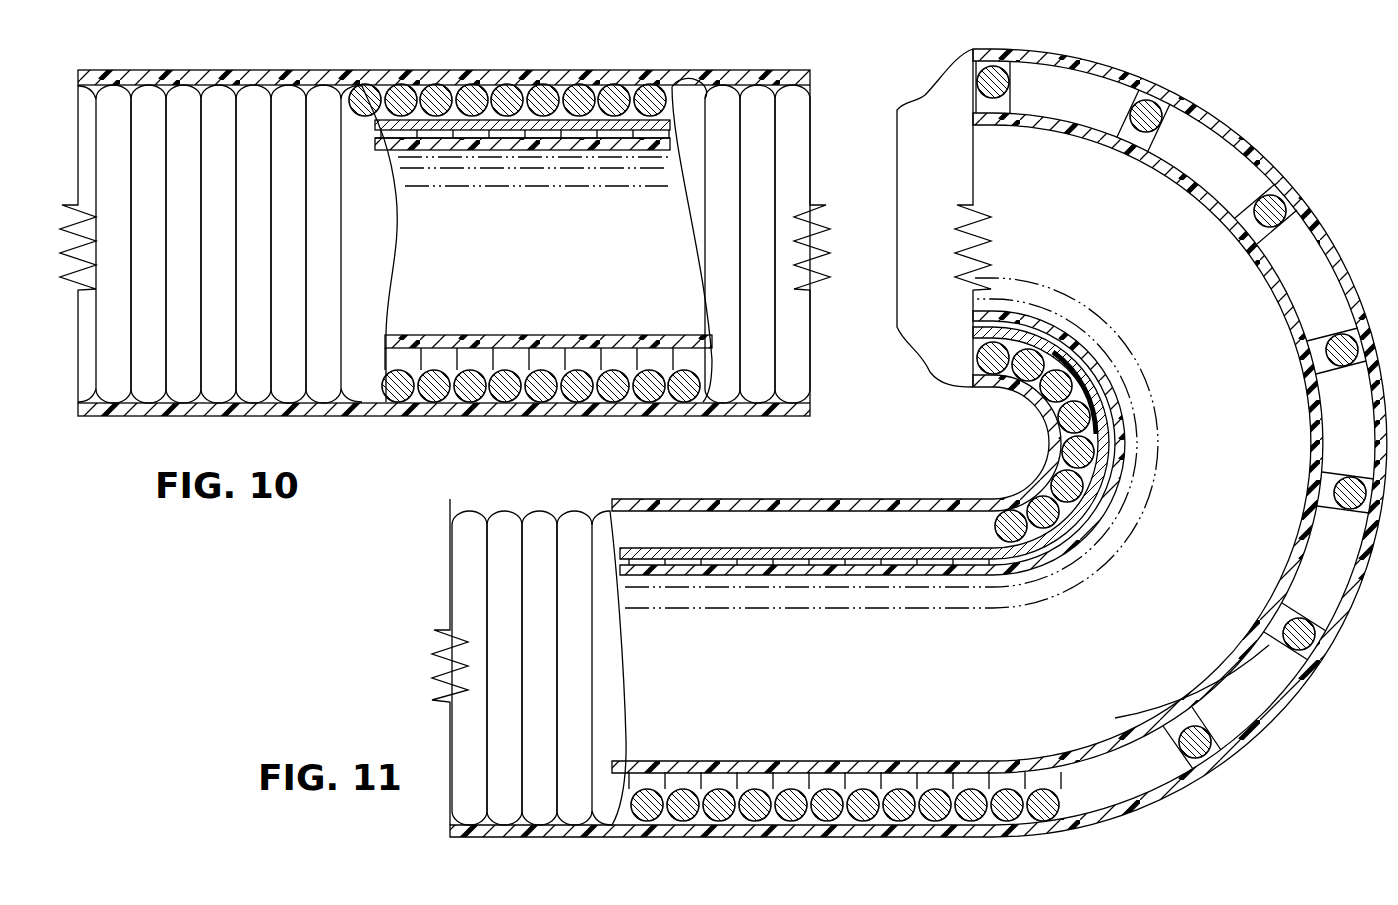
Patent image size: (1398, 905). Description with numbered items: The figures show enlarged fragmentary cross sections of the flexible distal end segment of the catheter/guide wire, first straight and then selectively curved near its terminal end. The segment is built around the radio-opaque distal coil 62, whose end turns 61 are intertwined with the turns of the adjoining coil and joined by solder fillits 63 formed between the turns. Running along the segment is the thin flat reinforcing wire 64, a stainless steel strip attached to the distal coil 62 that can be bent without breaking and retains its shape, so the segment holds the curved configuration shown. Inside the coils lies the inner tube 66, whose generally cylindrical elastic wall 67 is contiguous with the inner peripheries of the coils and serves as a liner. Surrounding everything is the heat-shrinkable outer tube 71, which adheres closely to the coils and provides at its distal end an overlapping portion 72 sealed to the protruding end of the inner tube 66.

In FIG. 11, the end turns 61 is at (990, 70).
In FIG. 10, the distal coil 62 is at (352, 258).
In FIG. 11, the distal coil 62 is at (456, 575).
In FIG. 11, the fillits 63 is at (1016, 345).
In FIG. 10, the reinforcing wire 64 is at (612, 130).
In FIG. 11, the reinforcing wire 64 is at (1042, 333).
In FIG. 10, the inner tube 66 is at (497, 150).
In FIG. 11, the inner tube 66 is at (1077, 135).
In FIG. 11, the elastic wall 67 is at (1210, 682).
In FIG. 10, the outer tube 71 is at (437, 77).
In FIG. 11, the outer tube 71 is at (1137, 73).
In FIG. 11, the overlapping portion 72 is at (957, 109).